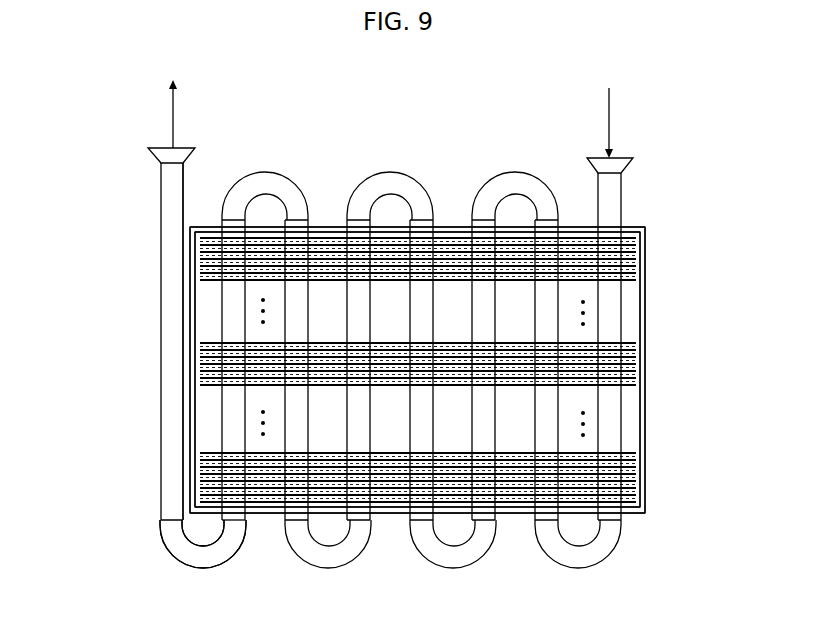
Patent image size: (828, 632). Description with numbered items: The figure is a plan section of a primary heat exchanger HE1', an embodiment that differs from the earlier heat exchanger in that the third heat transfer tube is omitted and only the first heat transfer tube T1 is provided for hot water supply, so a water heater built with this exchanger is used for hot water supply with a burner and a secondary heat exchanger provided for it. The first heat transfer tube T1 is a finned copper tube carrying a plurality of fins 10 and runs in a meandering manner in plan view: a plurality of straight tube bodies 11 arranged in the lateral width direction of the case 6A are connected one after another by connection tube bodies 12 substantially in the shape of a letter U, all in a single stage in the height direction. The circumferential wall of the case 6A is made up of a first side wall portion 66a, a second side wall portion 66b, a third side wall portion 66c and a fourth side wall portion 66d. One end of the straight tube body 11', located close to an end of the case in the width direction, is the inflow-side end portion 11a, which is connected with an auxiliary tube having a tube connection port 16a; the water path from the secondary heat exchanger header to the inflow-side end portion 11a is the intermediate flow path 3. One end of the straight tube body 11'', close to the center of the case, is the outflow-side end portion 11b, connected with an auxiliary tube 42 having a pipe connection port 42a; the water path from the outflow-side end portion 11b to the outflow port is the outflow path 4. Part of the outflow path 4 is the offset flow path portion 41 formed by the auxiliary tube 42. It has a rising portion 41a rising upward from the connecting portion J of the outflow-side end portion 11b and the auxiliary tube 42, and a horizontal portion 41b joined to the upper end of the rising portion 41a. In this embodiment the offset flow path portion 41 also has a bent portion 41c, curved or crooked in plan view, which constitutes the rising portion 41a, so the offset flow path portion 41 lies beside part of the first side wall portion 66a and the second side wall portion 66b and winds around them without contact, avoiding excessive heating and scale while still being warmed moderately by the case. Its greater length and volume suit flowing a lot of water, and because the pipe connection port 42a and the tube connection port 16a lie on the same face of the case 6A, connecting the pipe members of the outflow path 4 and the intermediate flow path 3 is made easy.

The primary heat exchanger HE1' is at (356, 281).
The intermediate flow path 3 is at (608, 128).
The outflow path 4 is at (171, 119).
The case 6A is at (645, 397).
The fins 10 is at (403, 356).
The straight tube bodies 11 is at (479, 370).
The straight tube body 11' is at (649, 373).
The straight tube body 11'' is at (261, 361).
The inflow-side end portion 11a is at (607, 187).
The outflow-side end portion 11b is at (237, 517).
The connection tube bodies 12 is at (265, 183).
The tube connection port 16a is at (622, 158).
The offset flow path portion 41 is at (172, 352).
The rising portion 41a is at (230, 541).
The horizontal portion 41b is at (168, 392).
The bent portion 41c is at (170, 555).
The auxiliary tube 42 is at (160, 441).
The pipe connection port 42a is at (157, 147).
The first side wall portion 66a is at (397, 508).
The second side wall portion 66b is at (196, 315).
The third side wall portion 66c is at (452, 226).
The fourth side wall portion 66d is at (645, 357).
The connecting portion J is at (252, 525).
The first heat transfer tube T1 is at (385, 166).